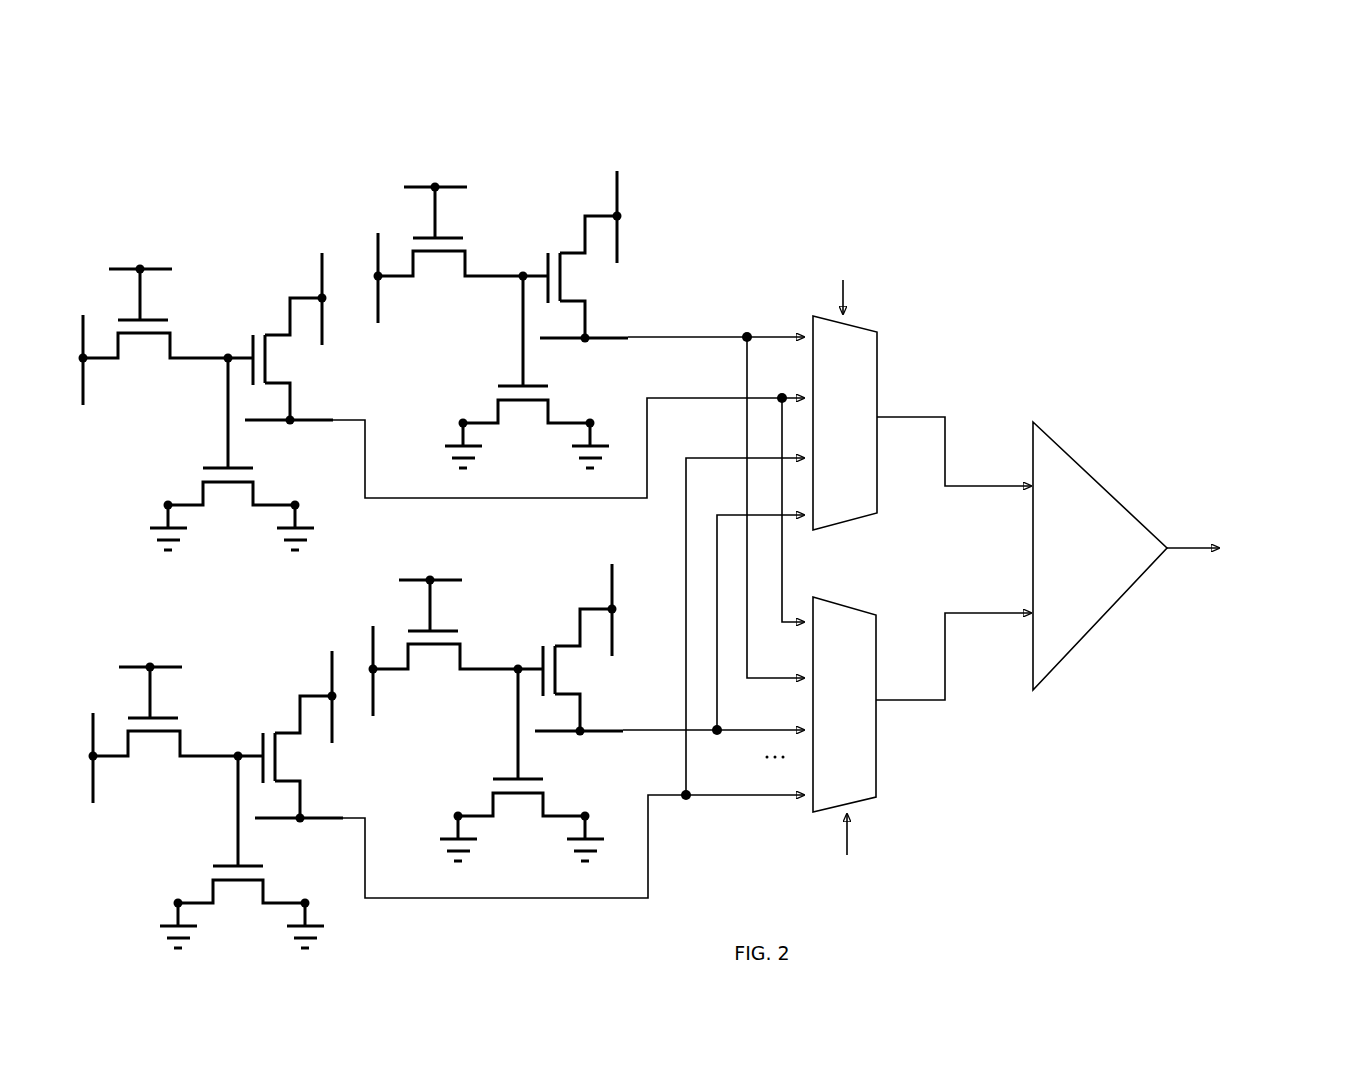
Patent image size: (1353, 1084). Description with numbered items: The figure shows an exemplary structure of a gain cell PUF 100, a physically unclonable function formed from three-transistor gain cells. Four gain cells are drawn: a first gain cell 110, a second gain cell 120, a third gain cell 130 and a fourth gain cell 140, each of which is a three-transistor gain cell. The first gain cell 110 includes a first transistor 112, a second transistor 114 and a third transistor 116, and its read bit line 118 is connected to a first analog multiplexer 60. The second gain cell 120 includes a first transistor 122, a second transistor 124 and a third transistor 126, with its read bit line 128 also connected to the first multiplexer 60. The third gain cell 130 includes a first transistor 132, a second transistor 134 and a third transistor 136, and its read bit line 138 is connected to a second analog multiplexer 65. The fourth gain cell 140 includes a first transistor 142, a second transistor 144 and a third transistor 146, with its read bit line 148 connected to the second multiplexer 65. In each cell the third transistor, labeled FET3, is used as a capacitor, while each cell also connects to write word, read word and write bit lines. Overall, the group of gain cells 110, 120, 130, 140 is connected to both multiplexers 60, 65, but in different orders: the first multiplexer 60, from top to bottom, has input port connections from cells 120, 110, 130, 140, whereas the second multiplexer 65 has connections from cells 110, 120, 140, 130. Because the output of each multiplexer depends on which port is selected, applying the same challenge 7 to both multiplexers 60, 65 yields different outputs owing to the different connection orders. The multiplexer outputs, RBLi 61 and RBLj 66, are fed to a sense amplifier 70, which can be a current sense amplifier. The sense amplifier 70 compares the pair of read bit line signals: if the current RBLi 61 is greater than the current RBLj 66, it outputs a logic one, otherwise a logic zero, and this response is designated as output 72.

The gain cell PUF 100 is at (855, 123).
The first gain cell 110 is at (232, 122).
The first transistor 112 is at (210, 215).
The second transistor 114 is at (273, 305).
The third transistor 116 is at (188, 466).
The read bit line 118 is at (672, 399).
The second gain cell 120 is at (618, 90).
The first transistor 122 is at (470, 143).
The second transistor 124 is at (560, 212).
The third transistor 126 is at (485, 380).
The read bit line 128 is at (647, 338).
The third gain cell 130 is at (170, 614).
The first transistor 132 is at (192, 638).
The second transistor 134 is at (277, 700).
The third transistor 136 is at (192, 860).
The read bit line 138 is at (703, 796).
The fourth gain cell 140 is at (556, 551).
The first transistor 142 is at (473, 555).
The second transistor 144 is at (558, 616).
The third transistor 146 is at (478, 775).
The read bit line 148 is at (700, 733).
The first analog multiplexer 60 is at (937, 300).
The second analog multiplexer 65 is at (878, 596).
The challenge 7 is at (857, 574).
The RBLi 61 is at (954, 430).
The RBLj 66 is at (953, 678).
The sense amplifier 70 is at (1122, 435).
The output 72 is at (1251, 531).